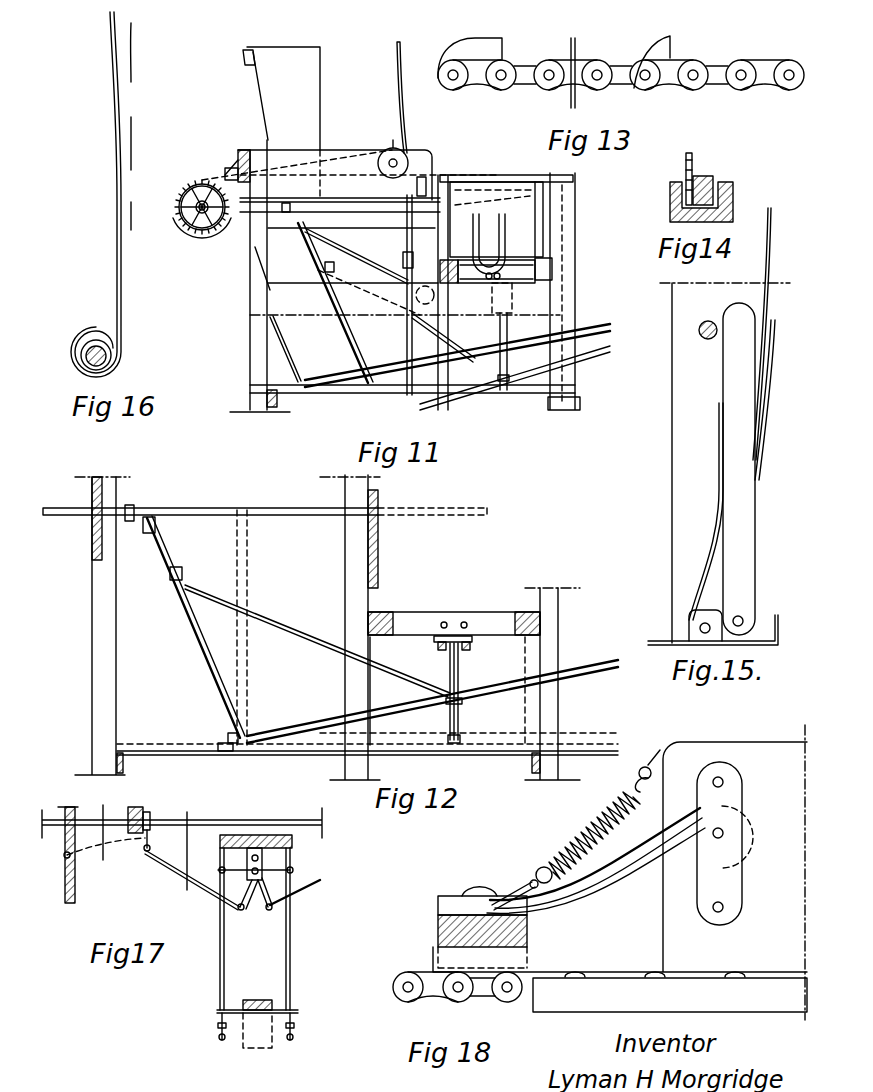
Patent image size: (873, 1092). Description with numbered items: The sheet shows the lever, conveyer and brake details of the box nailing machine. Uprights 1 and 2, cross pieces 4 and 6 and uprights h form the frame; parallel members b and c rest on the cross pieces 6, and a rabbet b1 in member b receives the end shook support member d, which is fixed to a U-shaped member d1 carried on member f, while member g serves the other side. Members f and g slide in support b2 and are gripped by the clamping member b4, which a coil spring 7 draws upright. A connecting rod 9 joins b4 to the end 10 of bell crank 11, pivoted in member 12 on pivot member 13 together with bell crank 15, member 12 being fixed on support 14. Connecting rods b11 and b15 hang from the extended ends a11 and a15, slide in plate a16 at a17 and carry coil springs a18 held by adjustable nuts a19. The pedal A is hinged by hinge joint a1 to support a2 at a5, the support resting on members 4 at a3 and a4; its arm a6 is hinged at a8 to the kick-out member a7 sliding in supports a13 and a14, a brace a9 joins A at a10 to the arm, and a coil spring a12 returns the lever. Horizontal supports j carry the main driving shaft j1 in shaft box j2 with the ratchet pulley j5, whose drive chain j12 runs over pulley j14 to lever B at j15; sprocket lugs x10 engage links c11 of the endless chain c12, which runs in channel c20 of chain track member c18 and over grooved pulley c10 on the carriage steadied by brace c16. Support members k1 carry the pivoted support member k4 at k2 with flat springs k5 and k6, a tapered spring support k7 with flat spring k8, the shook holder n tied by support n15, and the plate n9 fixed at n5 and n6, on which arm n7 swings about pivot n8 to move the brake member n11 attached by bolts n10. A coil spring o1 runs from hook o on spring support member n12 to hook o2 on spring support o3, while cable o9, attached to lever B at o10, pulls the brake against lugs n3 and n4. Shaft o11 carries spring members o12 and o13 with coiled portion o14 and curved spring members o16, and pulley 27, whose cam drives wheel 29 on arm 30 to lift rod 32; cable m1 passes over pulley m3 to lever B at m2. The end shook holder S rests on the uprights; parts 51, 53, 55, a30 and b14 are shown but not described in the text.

In FIG. 16, the spring member o13 is at (113, 236).
In FIG. 16, the curved spring members o16 is at (132, 63).
In FIG. 16, the coiled portion o14 is at (90, 342).
In FIG. 16, the shaft o11 is at (87, 357).
In FIG. 15, the shaft o11 is at (706, 320).
In FIG. 11, the uprights 2 is at (256, 328).
In FIG. 12, the uprights 2 is at (108, 652).
In FIG. 11, the uprights 1 is at (568, 232).
In FIG. 12, the uprights 1 is at (558, 610).
In FIG. 11, the cross pieces 4 is at (270, 407).
In FIG. 12, the cross pieces 4 is at (125, 762).
In FIG. 11, the uprights h is at (407, 230).
In FIG. 12, the uprights h is at (355, 540).
In FIG. 11, the member c is at (445, 267).
In FIG. 12, the member c is at (385, 612).
In FIG. 11, the side and bottom shook holder n is at (305, 58).
In FIG. 11, the support n15 is at (247, 52).
In FIG. 11, the support member k1 is at (333, 157).
In FIG. 15, the support member k1 is at (693, 480).
In FIG. 18, the support member k1 is at (770, 760).
In FIG. 11, the kick-out member a7 is at (310, 205).
In FIG. 12, the kick-out member a7 is at (180, 510).
In FIG. 11, the pulley 27 is at (390, 150).
In FIG. 11, the spring member o12 is at (404, 135).
In FIG. 11, the bracket 55 is at (428, 177).
In FIG. 11, the lever arm a30 is at (440, 175).
In FIG. 11, the rod 32 is at (452, 176).
In FIG. 11, the wheel 29 is at (352, 184).
In FIG. 11, the arm 30 is at (410, 187).
In FIG. 11, the end shook holder S is at (485, 175).
In FIG. 11, the cover lug 51 is at (535, 174).
In FIG. 11, the cover lug 53 is at (560, 175).
In FIG. 11, the end shook support member d is at (538, 205).
In FIG. 11, the grooved pulley c10 is at (515, 185).
In FIG. 11, the U-shaped member d1 is at (506, 225).
In FIG. 11, the member b is at (545, 267).
In FIG. 12, the member b is at (520, 612).
In FIG. 17, the member b is at (322, 840).
In FIG. 11, the rabbet b1 is at (552, 250).
In FIG. 11, the member f is at (490, 278).
In FIG. 12, the member f is at (445, 622).
In FIG. 17, the member f is at (215, 820).
In FIG. 11, the member g is at (496, 285).
In FIG. 12, the member g is at (465, 622).
In FIG. 11, the brace c16 is at (440, 296).
In FIG. 11, the coil spring a12 is at (507, 345).
In FIG. 12, the coil spring a12 is at (525, 680).
In FIG. 11, the lever A is at (596, 328).
In FIG. 12, the lever A is at (595, 668).
In FIG. 17, the lever A is at (255, 1000).
In FIG. 11, the lever B is at (612, 350).
In FIG. 11, the connecting rod b15 is at (508, 372).
In FIG. 12, the connecting rod b15 is at (462, 722).
In FIG. 17, the connecting rod b15 is at (292, 935).
In FIG. 11, the connecting rod b11 is at (497, 375).
In FIG. 12, the connecting rod b11 is at (440, 712).
In FIG. 17, the connecting rod b11 is at (220, 928).
In FIG. 11, the brace a9 is at (497, 350).
In FIG. 12, the brace a9 is at (270, 618).
In FIG. 11, the attachment point j15 is at (472, 360).
In FIG. 11, the shaft box j2 is at (455, 335).
In FIG. 11, the arm a6 is at (352, 337).
In FIG. 12, the arm a6 is at (205, 630).
In FIG. 11, the cable m1 is at (405, 250).
In FIG. 11, the pulley m3 is at (415, 312).
In FIG. 11, the attachment point m2 is at (407, 368).
In FIG. 11, the cross pieces 6 is at (317, 307).
In FIG. 17, the cross pieces 6 is at (67, 852).
In FIG. 11, the attachment point o10 is at (298, 380).
In FIG. 11, the hinge joint a1 is at (350, 390).
In FIG. 12, the hinge joint a1 is at (230, 737).
In FIG. 11, the support a2 is at (378, 393).
In FIG. 12, the support a2 is at (290, 750).
In FIG. 11, the drive chain j12 is at (336, 265).
In FIG. 11, the pulley j14 is at (415, 255).
In FIG. 11, the ratchet pulley j5 is at (210, 180).
In FIG. 11, the teeth or lugs x10 is at (185, 190).
In FIG. 11, the endless chain c12 is at (197, 238).
In FIG. 13, the endless chain c12 is at (670, 85).
In FIG. 14, the endless chain c12 is at (718, 180).
In FIG. 11, the horizontal supports j is at (213, 236).
In FIG. 11, the main driving shaft j1 is at (195, 228).
In FIG. 11, the cable o9 is at (255, 247).
In FIG. 11, the spring support member n12 is at (243, 150).
In FIG. 18, the spring support member n12 is at (690, 742).
In FIG. 11, the brake member n11 is at (226, 168).
In FIG. 18, the brake member n11 is at (438, 928).
In FIG. 11, the coil spring o1 is at (238, 162).
In FIG. 18, the coil spring o1 is at (588, 833).
In FIG. 11, the plate n9 is at (260, 170).
In FIG. 18, the plate n9 is at (730, 878).
In FIG. 13, the links c11 is at (478, 85).
In FIG. 13, the lug n3 is at (492, 42).
In FIG. 18, the lug n3 is at (432, 946).
In FIG. 13, the lug n4 is at (665, 42).
In FIG. 14, the chain track member c18 is at (674, 205).
In FIG. 18, the chain track member c18 is at (640, 995).
In FIG. 14, the rectangular channel c20 is at (733, 192).
In FIG. 15, the support member k4 is at (738, 493).
In FIG. 15, the flat curved spring k6 is at (760, 303).
In FIG. 15, the flat curved spring k5 is at (757, 412).
In FIG. 15, the flat spring member k8 is at (702, 547).
In FIG. 15, the spring support member k7 is at (702, 618).
In FIG. 15, the pivot point k2 is at (745, 620).
In FIG. 12, the support a14 is at (92, 493).
In FIG. 12, the hinge a8 is at (134, 506).
In FIG. 12, the extended end of bell crank a11 is at (183, 565).
In FIG. 17, the extended end of bell crank a11 is at (222, 870).
In FIG. 12, the support a13 is at (378, 495).
In FIG. 12, the mounting point a3 is at (118, 738).
In FIG. 12, the attachment point a5 is at (228, 752).
In FIG. 12, the mounting point a4 is at (532, 760).
In FIG. 12, the member 12 is at (470, 641).
In FIG. 17, the member 12 is at (262, 858).
In FIG. 12, the bell crank member 11 is at (448, 662).
In FIG. 17, the bell crank member 11 is at (240, 878).
In FIG. 12, the bell crank 15 is at (458, 665).
In FIG. 17, the bell crank 15 is at (292, 886).
In FIG. 12, the attachment point a10 is at (470, 700).
In FIG. 17, the coil spring 7 is at (120, 858).
In FIG. 17, the support b2 is at (155, 800).
In FIG. 17, the clamping member b4 is at (150, 815).
In FIG. 17, the connecting rod 9 is at (175, 865).
In FIG. 17, the block b14 is at (220, 838).
In FIG. 17, the pivot member 13 is at (247, 855).
In FIG. 17, the end of bell crank 10 is at (250, 898).
In FIG. 17, the support 14 is at (305, 885).
In FIG. 17, the extended end of bell crank a15 is at (290, 877).
In FIG. 17, the mounting point a17 is at (215, 1010).
In FIG. 17, the plate a16 is at (290, 1008).
In FIG. 17, the coil springs a18 is at (218, 1027).
In FIG. 17, the adjustable nuts a19 is at (220, 1040).
In FIG. 18, the mounting point n5 is at (723, 782).
In FIG. 18, the pivot n8 is at (724, 833).
In FIG. 18, the mounting point n6 is at (724, 907).
In FIG. 18, the arm n7 is at (627, 890).
In FIG. 18, the bolts n10 is at (485, 890).
In FIG. 18, the hook o is at (640, 768).
In FIG. 18, the hook o2 is at (537, 870).
In FIG. 18, the spring support o3 is at (525, 888).